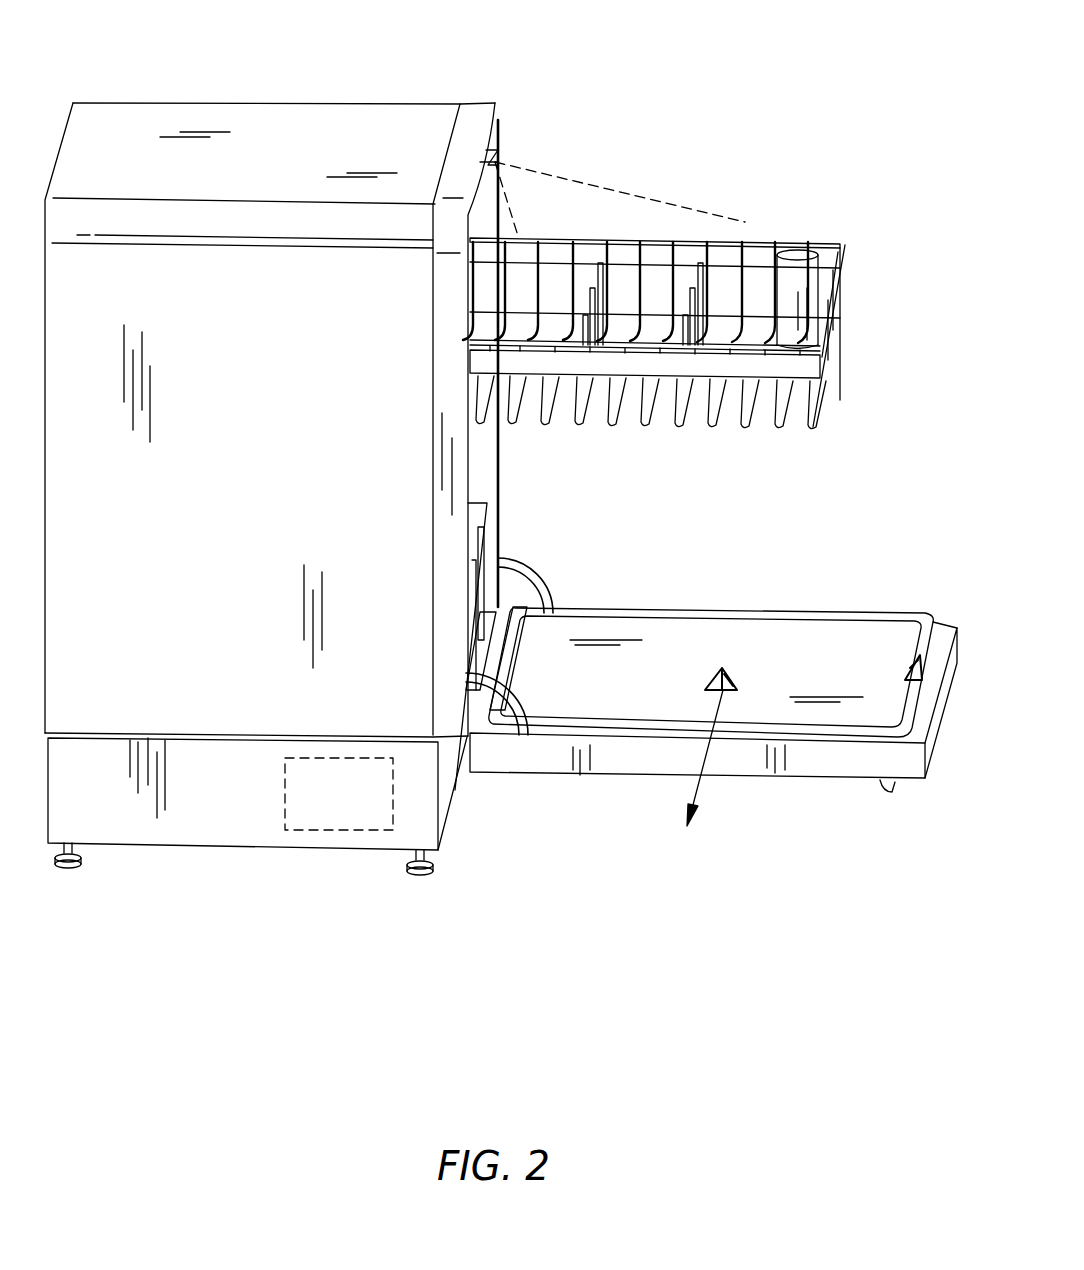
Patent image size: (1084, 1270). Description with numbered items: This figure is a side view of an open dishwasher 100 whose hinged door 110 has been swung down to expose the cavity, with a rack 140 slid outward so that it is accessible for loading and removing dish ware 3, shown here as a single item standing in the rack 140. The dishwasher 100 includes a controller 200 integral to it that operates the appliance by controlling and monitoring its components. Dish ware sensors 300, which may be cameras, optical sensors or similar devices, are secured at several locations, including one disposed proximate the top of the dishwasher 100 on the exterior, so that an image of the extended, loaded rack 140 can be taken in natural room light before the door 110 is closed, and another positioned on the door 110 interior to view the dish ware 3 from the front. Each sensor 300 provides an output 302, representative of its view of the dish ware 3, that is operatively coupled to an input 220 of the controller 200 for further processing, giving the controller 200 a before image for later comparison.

The dishwasher 100 is at (277, 125).
The controller 200 is at (325, 823).
The input 220 is at (346, 813).
The rack 140 is at (845, 305).
The dish ware 3 is at (810, 250).
The hinged door 110 is at (797, 638).
The dish ware sensor 300 is at (490, 160).
The output 302 is at (708, 787).